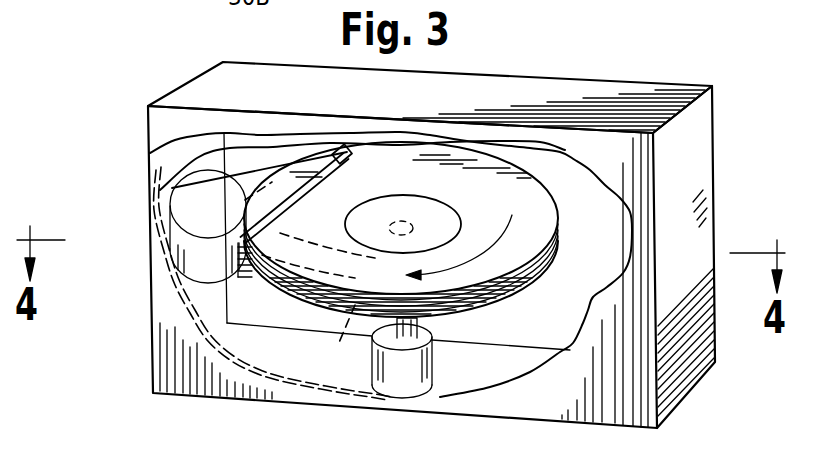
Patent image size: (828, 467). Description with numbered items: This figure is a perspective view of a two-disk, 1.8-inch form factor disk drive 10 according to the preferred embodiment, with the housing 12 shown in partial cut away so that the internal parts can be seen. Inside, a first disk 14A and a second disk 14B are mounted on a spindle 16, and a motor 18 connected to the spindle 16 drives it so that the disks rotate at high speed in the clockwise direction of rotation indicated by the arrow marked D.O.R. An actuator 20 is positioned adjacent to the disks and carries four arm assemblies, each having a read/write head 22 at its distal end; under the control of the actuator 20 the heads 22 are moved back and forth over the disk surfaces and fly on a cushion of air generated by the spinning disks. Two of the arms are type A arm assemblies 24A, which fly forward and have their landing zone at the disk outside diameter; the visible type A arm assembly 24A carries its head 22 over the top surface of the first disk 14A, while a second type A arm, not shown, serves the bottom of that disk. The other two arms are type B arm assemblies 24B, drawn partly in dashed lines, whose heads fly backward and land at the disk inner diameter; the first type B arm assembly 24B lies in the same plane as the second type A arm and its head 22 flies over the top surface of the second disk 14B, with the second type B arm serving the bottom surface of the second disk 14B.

The disk drive 10 is at (713, 65).
The housing 12 is at (516, 84).
The first disk 14A is at (523, 203).
The second disk 14B is at (560, 262).
The spindle 16 is at (447, 330).
The motor 18 is at (398, 392).
The actuator 20 is at (197, 247).
The read/write head 22 is at (152, 155).
The type A arm assembly 24A is at (172, 188).
The type B arm assembly 24B is at (158, 304).